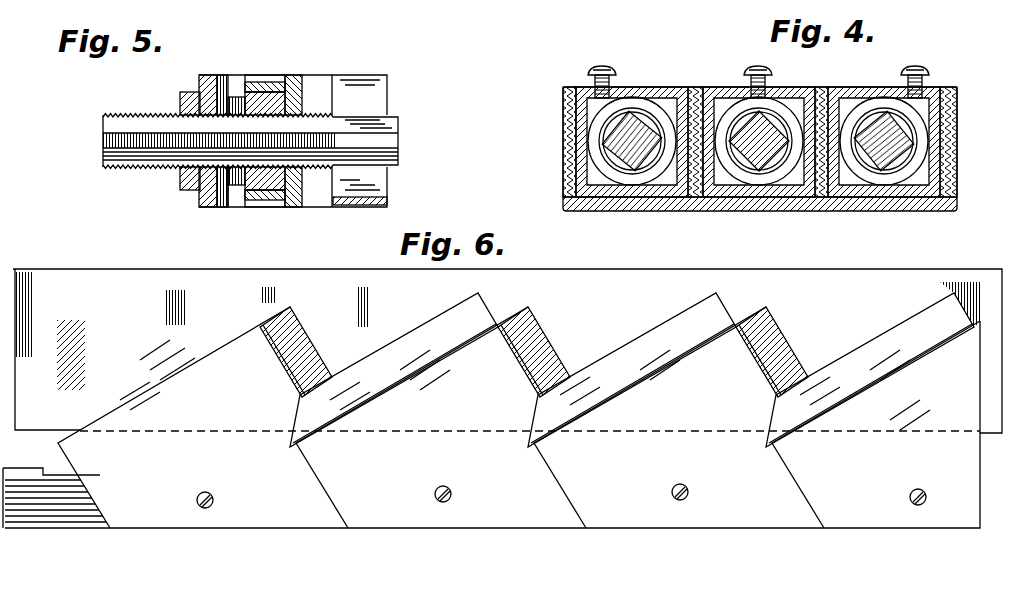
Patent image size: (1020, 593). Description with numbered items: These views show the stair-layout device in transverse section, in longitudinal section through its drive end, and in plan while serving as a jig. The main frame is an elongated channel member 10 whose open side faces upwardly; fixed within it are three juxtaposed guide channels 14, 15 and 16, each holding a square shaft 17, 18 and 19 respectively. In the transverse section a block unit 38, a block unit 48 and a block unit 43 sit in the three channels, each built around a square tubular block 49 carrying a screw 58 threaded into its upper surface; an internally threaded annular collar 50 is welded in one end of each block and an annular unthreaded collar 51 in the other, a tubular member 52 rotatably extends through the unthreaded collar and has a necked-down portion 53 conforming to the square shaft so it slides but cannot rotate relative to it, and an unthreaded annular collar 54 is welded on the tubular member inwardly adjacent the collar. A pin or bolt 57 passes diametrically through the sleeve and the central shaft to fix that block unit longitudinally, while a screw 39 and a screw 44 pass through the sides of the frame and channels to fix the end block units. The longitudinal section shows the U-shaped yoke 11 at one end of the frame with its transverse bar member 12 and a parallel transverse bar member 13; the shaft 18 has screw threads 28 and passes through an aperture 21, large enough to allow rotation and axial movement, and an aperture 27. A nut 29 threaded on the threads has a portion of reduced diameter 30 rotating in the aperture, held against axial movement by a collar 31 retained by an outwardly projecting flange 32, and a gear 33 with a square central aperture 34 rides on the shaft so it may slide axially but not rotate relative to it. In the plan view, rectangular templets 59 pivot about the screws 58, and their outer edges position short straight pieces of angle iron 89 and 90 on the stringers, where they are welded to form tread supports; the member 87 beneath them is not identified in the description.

In FIG. 5, the channel member 10 is at (357, 205).
In FIG. 4, the channel member 10 is at (949, 156).
In FIG. 6, the channel member 10 is at (42, 468).
In FIG. 5, the U-shaped yoke 11 is at (222, 210).
In FIG. 5, the transverse bar member 12 is at (207, 196).
In FIG. 5, the transverse bar member 13 is at (301, 186).
In FIG. 4, the guide channel 14 is at (567, 146).
In FIG. 4, the guide channel 15 is at (697, 90).
In FIG. 4, the guide channel 16 is at (944, 91).
In FIG. 4, the square shaft 17 is at (628, 123).
In FIG. 5, the square shaft 18 is at (398, 120).
In FIG. 4, the square shaft 18 is at (762, 122).
In FIG. 4, the square shaft 19 is at (872, 127).
In FIG. 6, the square shaft 19 is at (80, 490).
In FIG. 5, the aperture 21 is at (293, 110).
In FIG. 5, the aperture 27 is at (203, 94).
In FIG. 5, the screw threads 28 is at (127, 115).
In FIG. 5, the nut 29 is at (180, 185).
In FIG. 5, the portion of reduced diameter 30 is at (216, 207).
In FIG. 5, the collar 31 is at (222, 96).
In FIG. 5, the outwardly projecting flange 32 is at (238, 207).
In FIG. 5, the gear 33 is at (265, 82).
In FIG. 5, the square central aperture 34 is at (269, 190).
In FIG. 4, the block unit 38 is at (653, 92).
In FIG. 4, the screw 39 is at (590, 100).
In FIG. 4, the block unit 43 is at (888, 92).
In FIG. 4, the screw 44 is at (945, 95).
In FIG. 4, the block unit 48 is at (722, 92).
In FIG. 4, the square tubular block 49 is at (585, 196).
In FIG. 4, the internally threaded annular collar 50 is at (648, 179).
In FIG. 4, the annular unthreaded collar 51 is at (785, 114).
In FIG. 4, the tubular member 52 is at (600, 139).
In FIG. 4, the necked-down portion 53 is at (630, 170).
In FIG. 4, the unthreaded annular collar 54 is at (765, 179).
In FIG. 4, the pin or bolt 57 is at (810, 176).
In FIG. 4, the screw 58 is at (604, 66).
In FIG. 6, the screw 58 is at (208, 492).
In FIG. 6, the templet 59 is at (212, 365).
In FIG. 6, the backing plate 87 is at (58, 282).
In FIG. 6, the angle iron piece 89 is at (296, 336).
In FIG. 6, the angle iron piece 90 is at (401, 336).